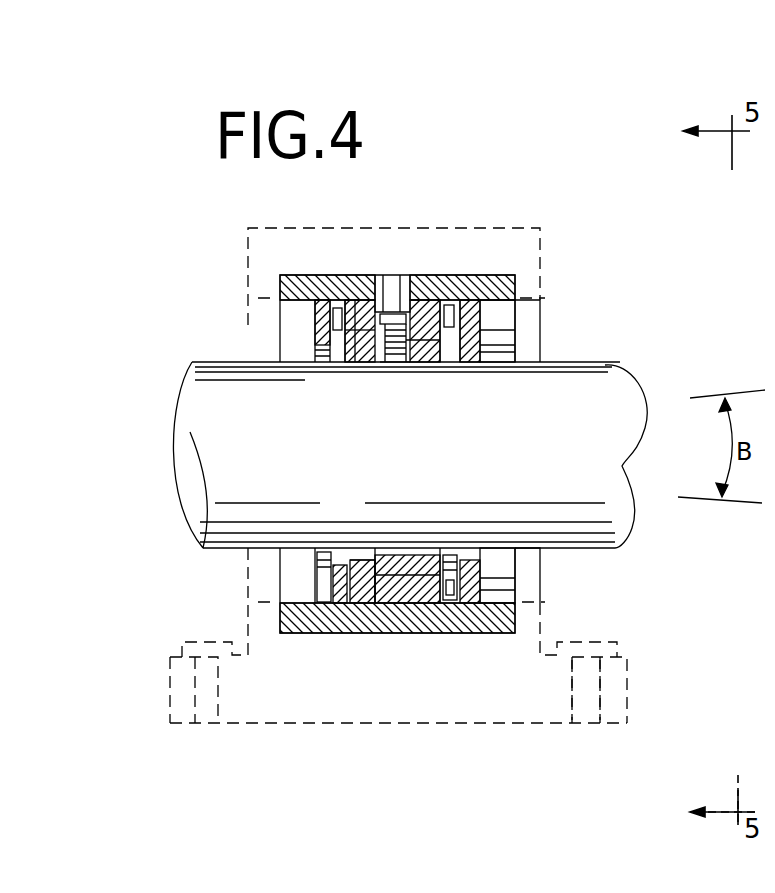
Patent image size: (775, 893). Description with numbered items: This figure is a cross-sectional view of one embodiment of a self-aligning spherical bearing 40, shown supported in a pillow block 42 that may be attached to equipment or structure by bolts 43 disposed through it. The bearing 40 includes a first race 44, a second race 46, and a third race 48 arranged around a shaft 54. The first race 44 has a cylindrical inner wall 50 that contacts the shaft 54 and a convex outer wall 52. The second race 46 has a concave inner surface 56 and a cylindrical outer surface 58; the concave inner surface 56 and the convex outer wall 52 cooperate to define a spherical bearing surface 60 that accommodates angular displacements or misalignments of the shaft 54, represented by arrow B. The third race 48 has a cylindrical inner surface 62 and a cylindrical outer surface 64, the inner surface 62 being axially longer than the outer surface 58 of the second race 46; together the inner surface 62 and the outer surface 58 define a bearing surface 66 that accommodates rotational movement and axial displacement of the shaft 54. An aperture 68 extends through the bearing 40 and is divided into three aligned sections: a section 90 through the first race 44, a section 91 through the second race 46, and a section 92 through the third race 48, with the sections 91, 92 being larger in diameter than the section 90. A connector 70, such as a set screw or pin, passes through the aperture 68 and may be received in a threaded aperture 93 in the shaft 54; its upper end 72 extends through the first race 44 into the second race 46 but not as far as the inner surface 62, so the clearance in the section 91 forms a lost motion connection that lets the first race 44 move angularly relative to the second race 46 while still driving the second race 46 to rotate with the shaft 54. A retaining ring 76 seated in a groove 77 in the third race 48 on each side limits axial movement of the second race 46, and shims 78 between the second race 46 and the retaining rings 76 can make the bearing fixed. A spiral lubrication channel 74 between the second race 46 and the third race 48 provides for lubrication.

The bearing 40 is at (226, 280).
The pillow block 42 is at (410, 710).
The bolts 43 is at (585, 710).
The first race 44 is at (378, 558).
The second race 46 is at (345, 575).
The third race 48 is at (305, 620).
The cylindrical inner wall 50 is at (480, 575).
The convex outer wall 52 is at (410, 562).
The shaft 54 is at (578, 392).
The concave inner surface 56 is at (420, 345).
The cylindrical outer surface 58 is at (480, 595).
The spherical bearing surface 60 is at (405, 603).
The cylindrical inner surface 62 is at (360, 598).
The cylindrical outer surface 64 is at (375, 600).
The bearing surface 66 is at (420, 603).
The aperture 68 is at (414, 258).
The connector 70 is at (400, 335).
The upper end 72 is at (345, 330).
The spiral lubrication channel 74 is at (346, 306).
The retaining ring 76 is at (322, 352).
The grooves 77 is at (468, 325).
The shims 78 is at (480, 335).
The aperture section 90 is at (470, 355).
The aperture section 91 is at (373, 313).
The aperture section 92 is at (395, 290).
The threaded aperture 93 is at (388, 373).